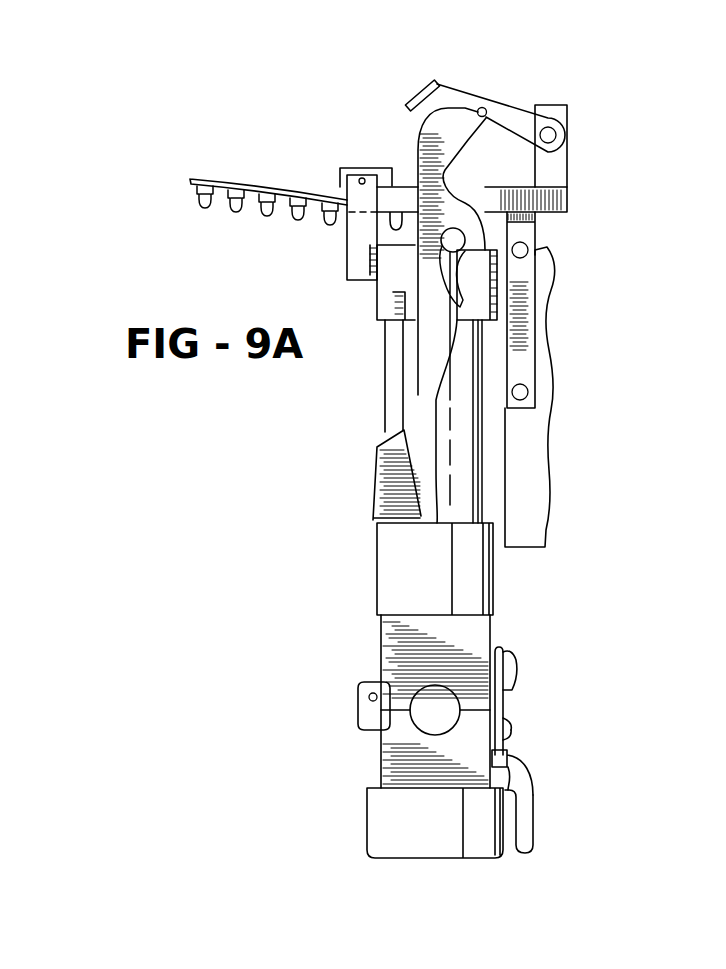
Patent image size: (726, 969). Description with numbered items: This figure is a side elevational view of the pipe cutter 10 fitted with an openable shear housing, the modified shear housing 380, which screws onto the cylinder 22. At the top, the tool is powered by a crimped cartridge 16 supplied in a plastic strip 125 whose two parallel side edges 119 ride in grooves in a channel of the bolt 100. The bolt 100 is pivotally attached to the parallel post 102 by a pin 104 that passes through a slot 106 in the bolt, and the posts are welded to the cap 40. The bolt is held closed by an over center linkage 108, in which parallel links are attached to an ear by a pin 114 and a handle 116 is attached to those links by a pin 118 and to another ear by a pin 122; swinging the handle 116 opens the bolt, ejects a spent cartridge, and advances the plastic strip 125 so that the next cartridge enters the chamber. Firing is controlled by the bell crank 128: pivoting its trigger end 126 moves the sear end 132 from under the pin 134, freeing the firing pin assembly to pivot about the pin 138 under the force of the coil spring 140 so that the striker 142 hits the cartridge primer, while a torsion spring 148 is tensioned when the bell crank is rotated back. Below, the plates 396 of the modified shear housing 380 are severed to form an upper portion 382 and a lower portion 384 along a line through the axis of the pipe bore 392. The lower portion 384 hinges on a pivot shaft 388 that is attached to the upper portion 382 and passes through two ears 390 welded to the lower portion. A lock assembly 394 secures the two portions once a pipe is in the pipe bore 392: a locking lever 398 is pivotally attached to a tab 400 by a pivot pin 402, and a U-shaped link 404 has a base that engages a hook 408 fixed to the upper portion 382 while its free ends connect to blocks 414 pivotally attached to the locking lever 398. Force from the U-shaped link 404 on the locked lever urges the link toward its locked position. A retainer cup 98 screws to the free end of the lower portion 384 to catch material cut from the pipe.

The pipe cutter 10 is at (250, 421).
The crimped cartridge 16 is at (203, 210).
The cylinder 22 is at (385, 425).
The cap 40 is at (377, 303).
The retainer cup 98 is at (373, 837).
The bolt 100 is at (568, 200).
The parallel post 102 is at (355, 235).
The pin 104 is at (362, 177).
The slot 106 is at (343, 176).
The over center linkage 108 is at (605, 248).
The pin 114 is at (528, 250).
The handle 116 is at (546, 488).
The pin 118 is at (528, 392).
The side edges 119 is at (285, 194).
The pin 122 is at (520, 302).
The plastic strip 125 is at (205, 178).
The trigger end 126 is at (378, 453).
The bell crank 128 is at (400, 338).
The sear end 132 is at (417, 147).
The pin 134 is at (486, 118).
The pin 138 is at (551, 112).
The coil spring 140 is at (505, 106).
The striker 142 is at (438, 82).
The torsion spring 148 is at (458, 325).
The modified shear housing 380 is at (376, 556).
The upper portion 382 is at (484, 623).
The lower portion 384 is at (383, 744).
The pivot shaft 388 is at (370, 693).
The ears 390 is at (357, 694).
The pipe bore 392 is at (418, 722).
The lock assembly 394 is at (605, 642).
The plates 396 is at (383, 630).
The locking lever 398 is at (526, 838).
The tab 400 is at (506, 720).
The pivot pin 402 is at (508, 730).
The U-shaped link 404 is at (503, 700).
The hook 408 is at (515, 658).
The blocks 414 is at (522, 770).